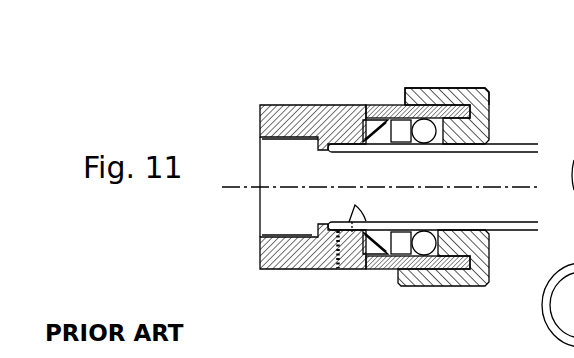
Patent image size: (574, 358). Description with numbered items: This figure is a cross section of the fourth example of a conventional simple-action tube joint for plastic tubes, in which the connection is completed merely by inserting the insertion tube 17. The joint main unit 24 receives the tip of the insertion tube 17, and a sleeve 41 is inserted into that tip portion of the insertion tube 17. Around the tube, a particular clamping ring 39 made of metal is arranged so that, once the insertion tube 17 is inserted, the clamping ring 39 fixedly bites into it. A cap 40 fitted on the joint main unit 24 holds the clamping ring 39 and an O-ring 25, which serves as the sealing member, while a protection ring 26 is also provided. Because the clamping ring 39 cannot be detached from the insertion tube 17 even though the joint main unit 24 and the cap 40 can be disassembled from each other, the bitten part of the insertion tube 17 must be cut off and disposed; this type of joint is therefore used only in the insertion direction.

The joint main unit 24 is at (340, 104).
The clamping ring 39 is at (378, 104).
The protection ring 26 is at (413, 88).
The O-ring 25 is at (452, 88).
The insertion tube 17 is at (496, 143).
The sleeve 41 is at (336, 270).
The cap 40 is at (465, 280).